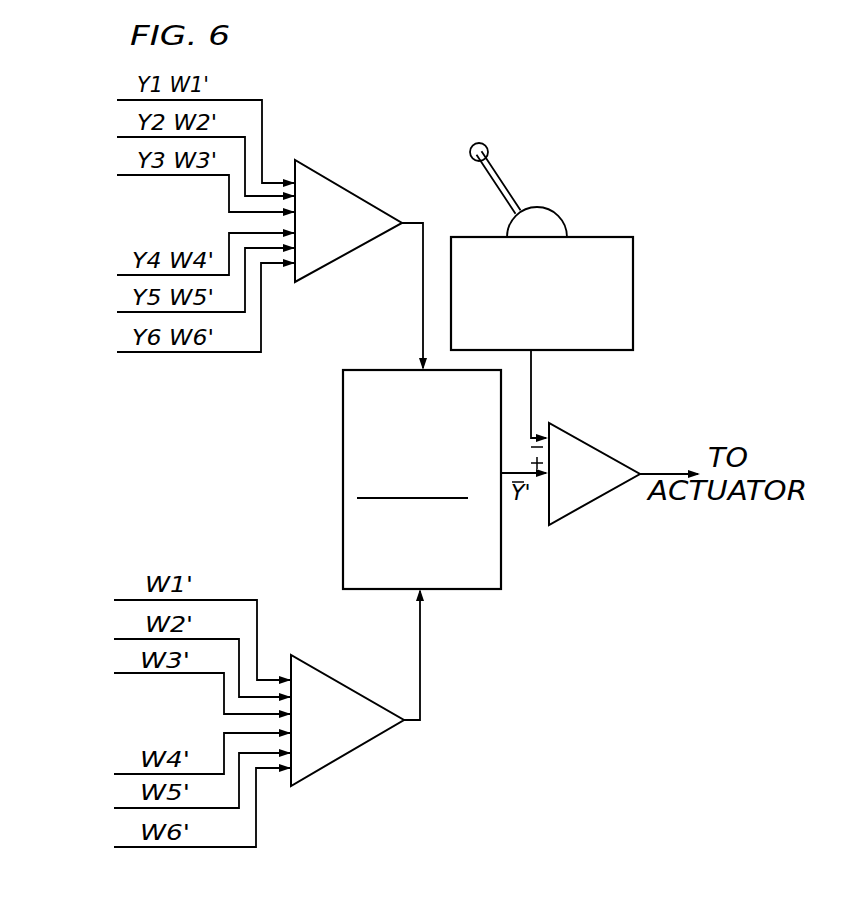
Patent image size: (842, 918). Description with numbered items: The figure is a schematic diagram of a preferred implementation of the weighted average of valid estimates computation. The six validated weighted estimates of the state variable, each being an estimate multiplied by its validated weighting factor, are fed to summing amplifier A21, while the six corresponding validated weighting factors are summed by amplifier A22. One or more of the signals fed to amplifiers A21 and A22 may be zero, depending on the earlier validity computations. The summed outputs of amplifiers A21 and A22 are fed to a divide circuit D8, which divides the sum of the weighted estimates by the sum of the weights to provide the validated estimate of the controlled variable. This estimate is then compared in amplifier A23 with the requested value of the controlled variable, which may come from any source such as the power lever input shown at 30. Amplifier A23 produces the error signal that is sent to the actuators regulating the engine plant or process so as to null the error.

The power lever input 30 is at (627, 300).
The divide circuit D8 is at (495, 570).
The summing amplifier A21 is at (348, 221).
The summing amplifier A22 is at (347, 720).
The amplifier A23 is at (594, 474).